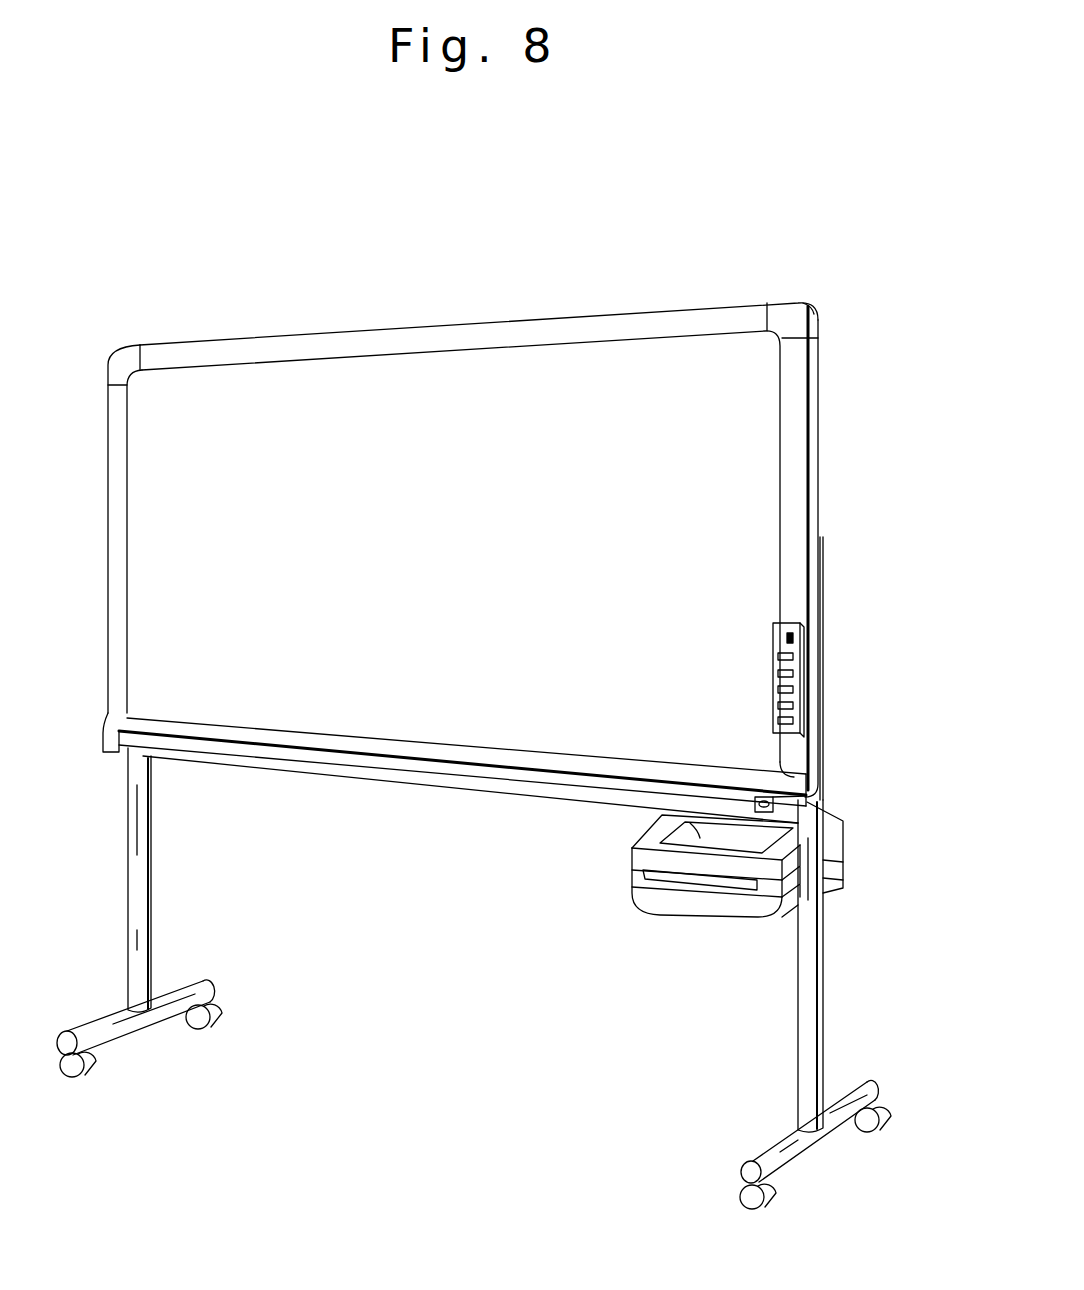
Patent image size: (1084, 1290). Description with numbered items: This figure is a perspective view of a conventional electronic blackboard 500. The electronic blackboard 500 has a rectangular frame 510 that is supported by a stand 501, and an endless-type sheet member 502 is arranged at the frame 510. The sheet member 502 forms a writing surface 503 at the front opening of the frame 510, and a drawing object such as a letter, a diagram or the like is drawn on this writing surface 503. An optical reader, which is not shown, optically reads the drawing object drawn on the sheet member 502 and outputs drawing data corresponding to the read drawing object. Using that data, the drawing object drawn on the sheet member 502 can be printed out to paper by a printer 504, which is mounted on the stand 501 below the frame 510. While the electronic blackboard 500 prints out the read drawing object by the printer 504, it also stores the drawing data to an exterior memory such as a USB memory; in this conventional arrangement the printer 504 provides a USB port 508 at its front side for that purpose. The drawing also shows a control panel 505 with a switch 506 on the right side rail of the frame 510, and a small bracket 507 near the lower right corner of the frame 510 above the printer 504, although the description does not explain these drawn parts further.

The electronic blackboard 500 is at (648, 250).
The frame 510 is at (748, 302).
The sheet member 502 is at (745, 447).
The writing surface 503 is at (748, 494).
The operation panel 505 is at (792, 688).
The power switch 506 is at (795, 637).
The connector bracket 507 is at (805, 800).
The printer 504 is at (843, 856).
The USB port 508 is at (740, 868).
The stand 501 is at (140, 880).